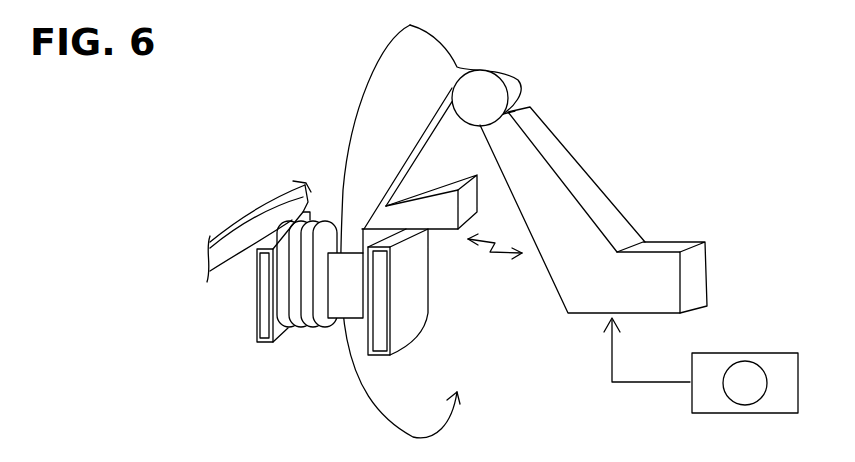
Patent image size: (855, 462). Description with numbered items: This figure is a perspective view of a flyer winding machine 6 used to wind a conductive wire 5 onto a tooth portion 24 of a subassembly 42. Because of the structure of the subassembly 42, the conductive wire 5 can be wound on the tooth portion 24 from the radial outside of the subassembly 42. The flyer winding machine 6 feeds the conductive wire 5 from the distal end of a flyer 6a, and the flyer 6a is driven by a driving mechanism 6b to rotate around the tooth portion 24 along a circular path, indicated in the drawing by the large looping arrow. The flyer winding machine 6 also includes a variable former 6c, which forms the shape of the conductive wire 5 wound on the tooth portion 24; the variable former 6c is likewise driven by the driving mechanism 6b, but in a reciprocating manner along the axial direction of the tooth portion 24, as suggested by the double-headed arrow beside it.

The conductive wire 5 is at (427, 131).
The flyer winding machine 6 is at (693, 177).
The flyer 6a is at (556, 130).
The driving mechanism 6b is at (735, 353).
The variable former 6c is at (437, 234).
The tooth portion 24 is at (345, 350).
The subassembly 42 is at (230, 340).